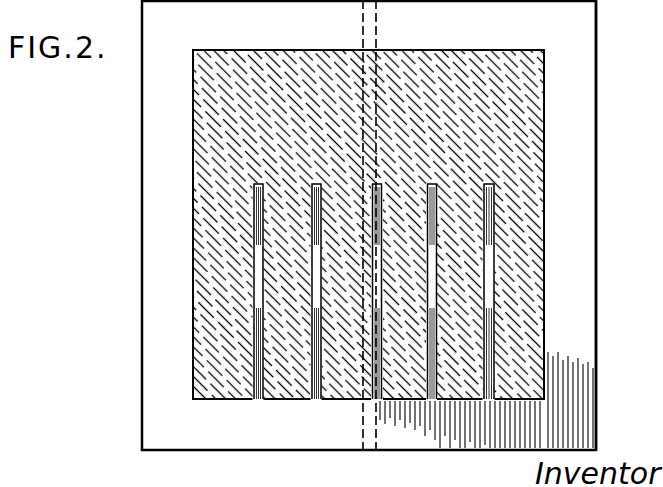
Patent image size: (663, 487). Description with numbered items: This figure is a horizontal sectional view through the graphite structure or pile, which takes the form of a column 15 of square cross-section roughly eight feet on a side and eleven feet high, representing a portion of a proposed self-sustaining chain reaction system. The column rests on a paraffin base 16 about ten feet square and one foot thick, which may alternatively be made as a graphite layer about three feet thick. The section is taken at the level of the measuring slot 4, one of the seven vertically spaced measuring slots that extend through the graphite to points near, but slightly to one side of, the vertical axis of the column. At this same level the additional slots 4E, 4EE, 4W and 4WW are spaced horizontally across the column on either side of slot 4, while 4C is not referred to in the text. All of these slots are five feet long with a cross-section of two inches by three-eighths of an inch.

The column 15 is at (567, 238).
The paraffin base 16 is at (583, 278).
The measuring slot 4 is at (365, 402).
The slot 4EE is at (258, 400).
The slot 4E is at (315, 400).
The center slot 4C is at (377, 291).
The slot 4W is at (431, 400).
The slot 4WW is at (490, 400).